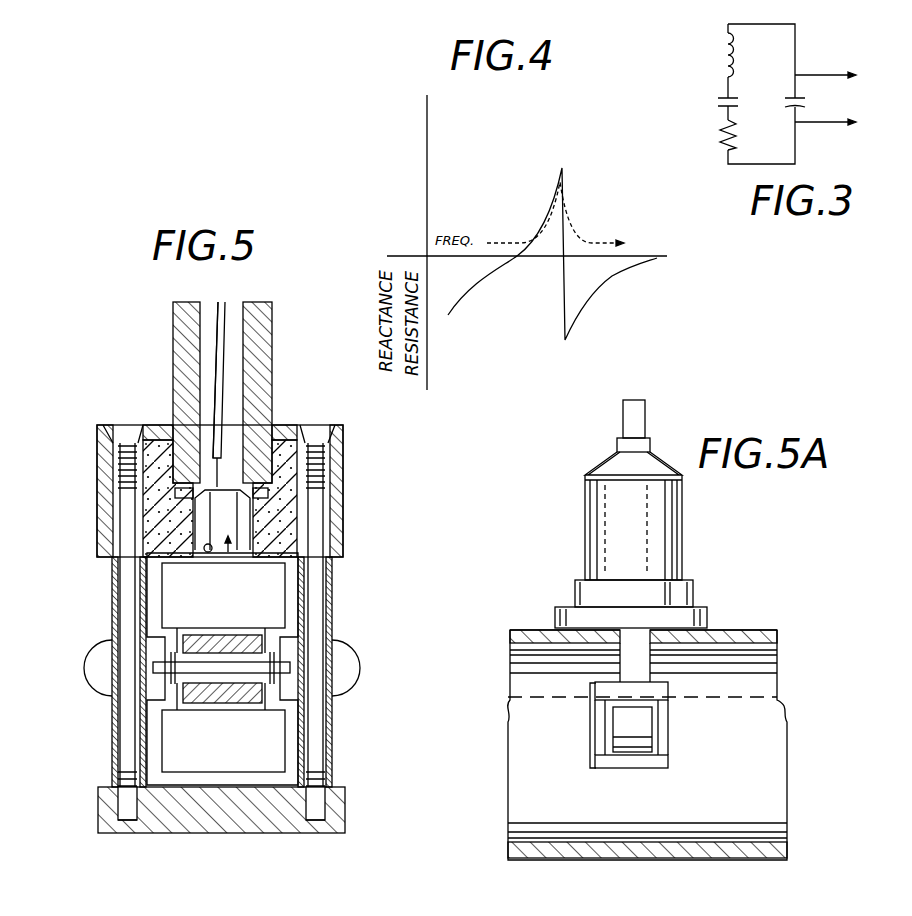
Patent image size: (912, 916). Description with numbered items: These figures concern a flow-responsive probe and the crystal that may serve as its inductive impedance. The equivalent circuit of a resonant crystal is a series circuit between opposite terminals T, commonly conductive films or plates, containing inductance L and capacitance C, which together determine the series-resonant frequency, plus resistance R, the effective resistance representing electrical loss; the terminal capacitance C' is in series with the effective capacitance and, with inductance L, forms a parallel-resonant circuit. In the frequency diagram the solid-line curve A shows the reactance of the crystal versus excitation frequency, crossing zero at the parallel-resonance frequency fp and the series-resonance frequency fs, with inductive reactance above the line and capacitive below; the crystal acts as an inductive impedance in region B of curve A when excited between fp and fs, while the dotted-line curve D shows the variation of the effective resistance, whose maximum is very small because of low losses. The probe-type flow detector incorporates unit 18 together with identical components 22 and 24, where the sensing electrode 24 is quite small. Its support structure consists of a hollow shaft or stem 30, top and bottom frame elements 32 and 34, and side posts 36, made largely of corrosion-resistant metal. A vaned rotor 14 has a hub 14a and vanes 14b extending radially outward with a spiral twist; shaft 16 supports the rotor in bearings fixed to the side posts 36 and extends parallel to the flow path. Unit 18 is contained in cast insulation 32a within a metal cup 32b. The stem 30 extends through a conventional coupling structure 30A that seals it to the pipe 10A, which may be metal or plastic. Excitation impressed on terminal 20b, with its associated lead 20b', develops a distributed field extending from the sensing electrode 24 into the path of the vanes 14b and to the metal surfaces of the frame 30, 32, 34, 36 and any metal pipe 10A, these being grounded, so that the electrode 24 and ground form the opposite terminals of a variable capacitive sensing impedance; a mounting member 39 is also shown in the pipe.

In FIG. 3, the inductance L is at (722, 56).
In FIG. 3, the capacitance C is at (712, 106).
In FIG. 3, the resistance R is at (722, 152).
In FIG. 3, the terminal capacitance C' is at (813, 100).
In FIG. 3, the terminals T is at (834, 99).
In FIG. 4, the reactance curve A is at (584, 310).
In FIG. 4, the inductive region of curve A B is at (548, 202).
In FIG. 4, the effective resistance curve D is at (576, 220).
In FIG. 4, the parallel-resonance frequency fp is at (517, 257).
In FIG. 4, the series-resonance frequency fs is at (566, 258).
In FIG. 5A, the pipe 10A is at (735, 630).
In FIG. 5, the vaned rotor 14 is at (168, 736).
In FIG. 5A, the vaned rotor 14 is at (658, 727).
In FIG. 5, the hub 14a is at (245, 693).
In FIG. 5, the vanes 14b is at (250, 630).
In FIG. 5, the shaft 16 is at (207, 674).
In FIG. 5, the unit 18 is at (229, 554).
In FIG. 5, the terminal 20b is at (275, 394).
In FIG. 5, the lead wire 20b' is at (161, 380).
In FIG. 5, the component 22 is at (257, 531).
In FIG. 5, the sensing electrode 24 is at (218, 552).
In FIG. 5, the hollow shaft or stem 30 is at (263, 343).
In FIG. 5A, the hollow shaft or stem 30 is at (623, 419).
In FIG. 5A, the coupling structure 30A is at (583, 536).
In FIG. 5, the top frame element 32 is at (90, 518).
In FIG. 5, the cast insulation 32a is at (150, 473).
In FIG. 5, the metal cup 32b is at (343, 461).
In FIG. 5, the bottom frame element 34 is at (88, 820).
In FIG. 5, the side posts 36 is at (335, 573).
In FIG. 5A, the mounting frame 39 is at (588, 717).